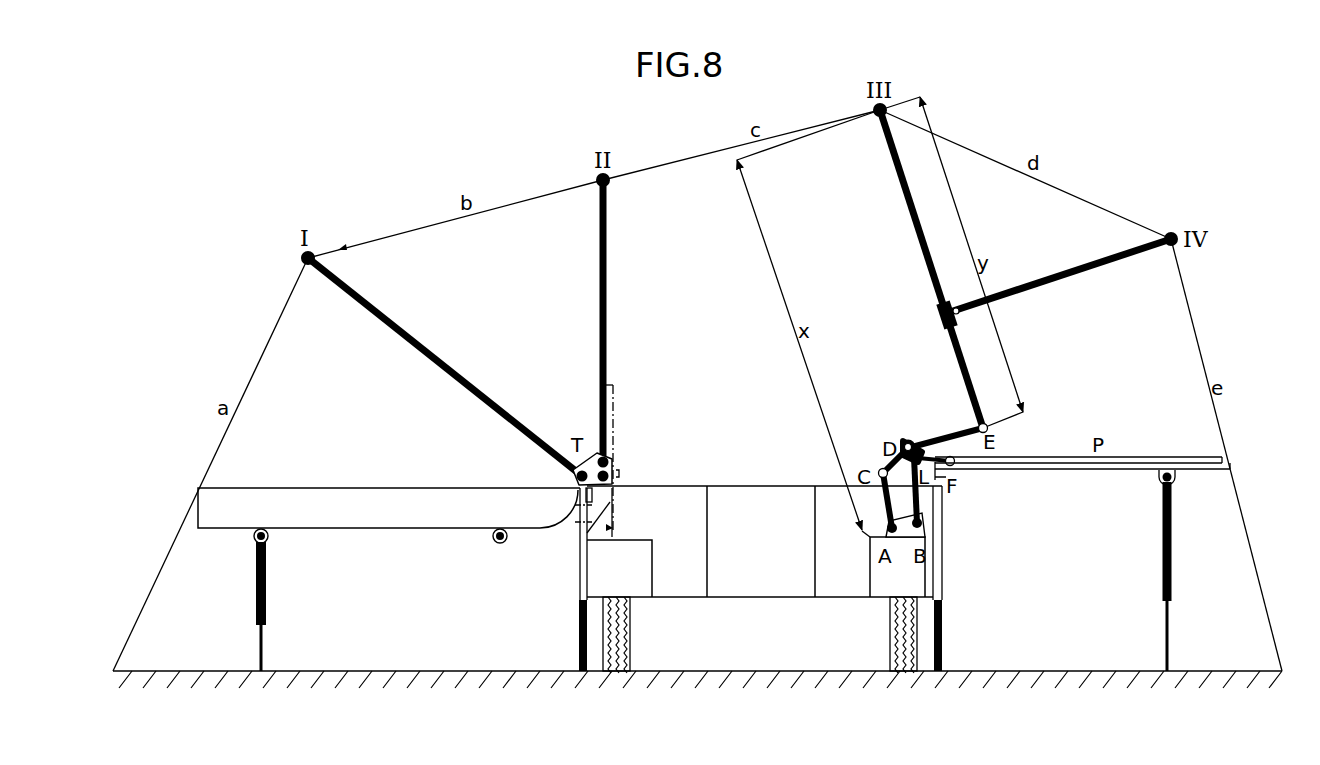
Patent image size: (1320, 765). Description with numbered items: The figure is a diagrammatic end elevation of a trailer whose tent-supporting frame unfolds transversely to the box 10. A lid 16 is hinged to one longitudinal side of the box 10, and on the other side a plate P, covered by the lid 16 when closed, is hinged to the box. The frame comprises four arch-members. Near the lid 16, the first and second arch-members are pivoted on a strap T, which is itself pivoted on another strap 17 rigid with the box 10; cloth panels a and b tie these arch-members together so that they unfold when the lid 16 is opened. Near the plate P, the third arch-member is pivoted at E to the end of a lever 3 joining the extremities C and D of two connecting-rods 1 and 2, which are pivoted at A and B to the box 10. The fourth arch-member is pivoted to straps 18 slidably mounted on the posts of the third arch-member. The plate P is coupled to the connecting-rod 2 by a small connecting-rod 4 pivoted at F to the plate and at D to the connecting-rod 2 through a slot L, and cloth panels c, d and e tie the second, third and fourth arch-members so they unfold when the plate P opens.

The connecting-rod 1 is at (881, 500).
The connecting-rod 2 is at (907, 490).
The lever 3 is at (945, 432).
The small connecting-rod 4 is at (945, 458).
The box 10 is at (764, 579).
The lid 16 is at (389, 579).
The strap 17 is at (606, 500).
The straps 18 is at (934, 315).